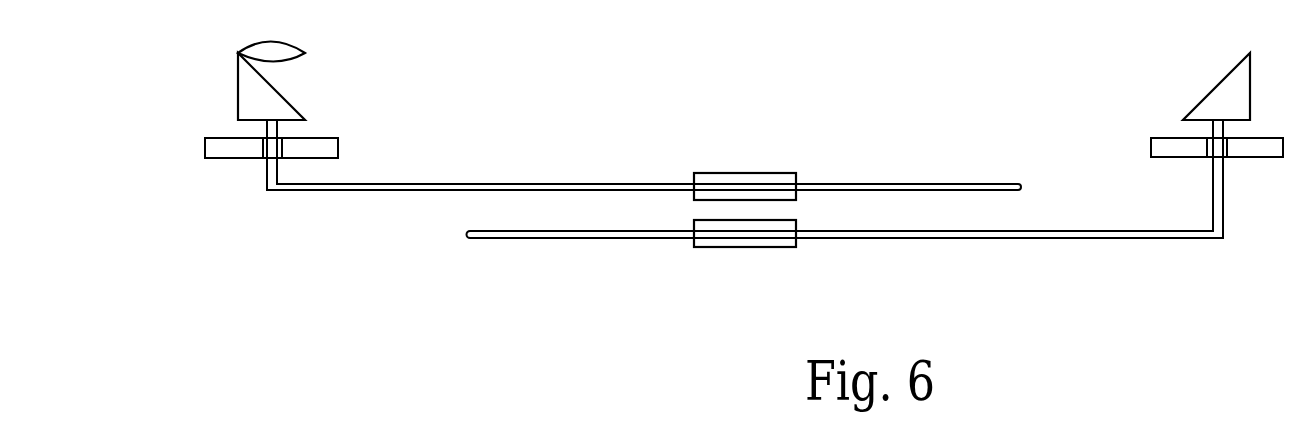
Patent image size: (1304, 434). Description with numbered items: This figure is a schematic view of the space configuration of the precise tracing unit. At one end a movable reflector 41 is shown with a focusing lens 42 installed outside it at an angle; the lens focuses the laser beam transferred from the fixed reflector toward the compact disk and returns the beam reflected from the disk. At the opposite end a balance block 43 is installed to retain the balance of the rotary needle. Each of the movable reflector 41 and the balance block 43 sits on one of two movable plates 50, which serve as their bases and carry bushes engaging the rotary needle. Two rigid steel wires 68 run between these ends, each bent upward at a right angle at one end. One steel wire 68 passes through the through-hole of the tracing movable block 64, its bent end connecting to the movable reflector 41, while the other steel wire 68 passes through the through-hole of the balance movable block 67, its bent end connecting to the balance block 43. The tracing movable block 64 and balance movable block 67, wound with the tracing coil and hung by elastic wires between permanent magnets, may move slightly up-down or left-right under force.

The movable reflector 41 is at (258, 100).
The focusing lens 42 is at (277, 57).
The balance block 43 is at (1222, 99).
The movable plate 50 is at (233, 148).
The tracing movable block 64 is at (782, 180).
The balance movable block 67 is at (740, 242).
The steel wire 68 is at (497, 188).